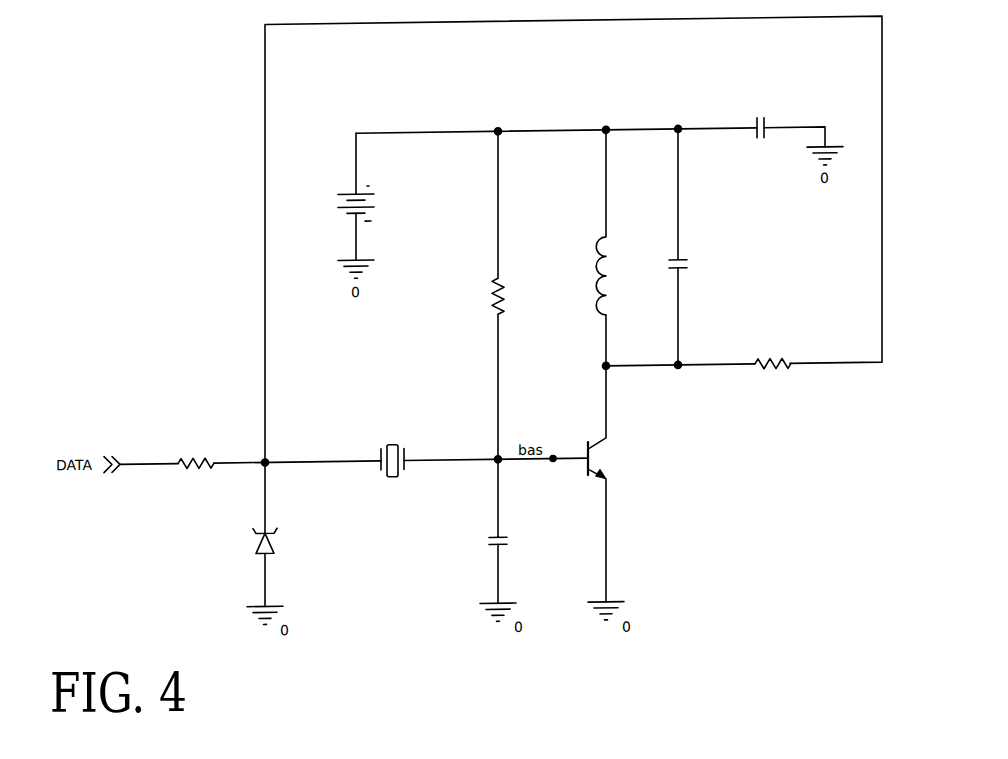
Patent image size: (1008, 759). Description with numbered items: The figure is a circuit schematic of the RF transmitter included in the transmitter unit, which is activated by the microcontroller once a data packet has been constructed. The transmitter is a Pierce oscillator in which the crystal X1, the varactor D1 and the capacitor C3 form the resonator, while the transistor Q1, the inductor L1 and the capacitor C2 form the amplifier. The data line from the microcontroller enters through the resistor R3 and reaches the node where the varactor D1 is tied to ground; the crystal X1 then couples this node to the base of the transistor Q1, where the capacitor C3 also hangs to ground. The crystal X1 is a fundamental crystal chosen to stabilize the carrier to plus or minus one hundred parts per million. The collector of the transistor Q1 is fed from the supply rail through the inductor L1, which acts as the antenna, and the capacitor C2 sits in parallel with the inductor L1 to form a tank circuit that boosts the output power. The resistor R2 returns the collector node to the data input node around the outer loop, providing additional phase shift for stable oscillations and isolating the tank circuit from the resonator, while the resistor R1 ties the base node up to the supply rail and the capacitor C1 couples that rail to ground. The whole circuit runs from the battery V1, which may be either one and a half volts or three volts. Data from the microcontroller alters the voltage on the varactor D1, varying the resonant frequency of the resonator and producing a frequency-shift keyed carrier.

The resistor R3 is at (196, 449).
The varactor D1 is at (284, 534).
The fundamental crystal X1 is at (405, 451).
The capacitor C3 is at (518, 531).
The transistor Q1 is at (616, 483).
The battery V1 is at (370, 197).
The resistor R1 is at (519, 295).
The inductor L1 is at (618, 247).
The capacitor C2 is at (697, 246).
The capacitor C1 is at (761, 115).
The resistor R2 is at (773, 352).